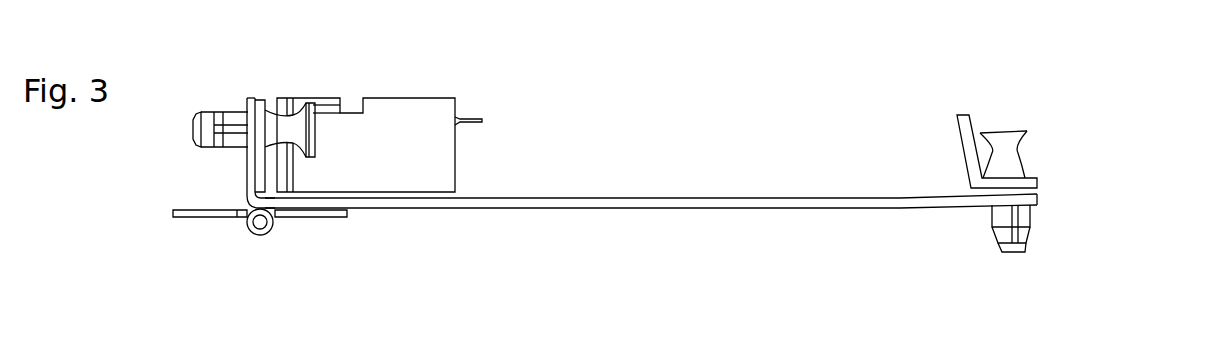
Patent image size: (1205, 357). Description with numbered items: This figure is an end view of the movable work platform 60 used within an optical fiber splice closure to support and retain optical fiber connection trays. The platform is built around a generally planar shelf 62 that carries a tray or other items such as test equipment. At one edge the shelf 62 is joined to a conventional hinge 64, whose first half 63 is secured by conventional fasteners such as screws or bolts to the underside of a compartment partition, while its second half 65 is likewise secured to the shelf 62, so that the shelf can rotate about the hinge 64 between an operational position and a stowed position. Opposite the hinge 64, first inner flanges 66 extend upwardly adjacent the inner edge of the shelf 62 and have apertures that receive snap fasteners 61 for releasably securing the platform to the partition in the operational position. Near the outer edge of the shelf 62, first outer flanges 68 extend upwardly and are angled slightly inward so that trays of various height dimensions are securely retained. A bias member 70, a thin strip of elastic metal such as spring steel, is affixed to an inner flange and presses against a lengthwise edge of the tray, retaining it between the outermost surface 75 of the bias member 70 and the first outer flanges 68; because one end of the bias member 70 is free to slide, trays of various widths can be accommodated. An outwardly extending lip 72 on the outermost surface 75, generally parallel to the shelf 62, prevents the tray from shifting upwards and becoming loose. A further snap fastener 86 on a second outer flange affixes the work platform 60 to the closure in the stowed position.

The work platform 60 is at (846, 92).
The snap fasteners 61 is at (297, 125).
The shelf 62 is at (723, 197).
The first half of hinge 63 is at (198, 215).
The hinge 64 is at (260, 234).
The second half of hinge 65 is at (327, 216).
The first inner flanges 66 is at (243, 177).
The first outer flanges 68 is at (957, 142).
The bias member 70 is at (392, 128).
The lip 72 is at (472, 118).
The outermost surface of bias member 75 is at (455, 159).
The snap fastener 86 is at (1010, 153).